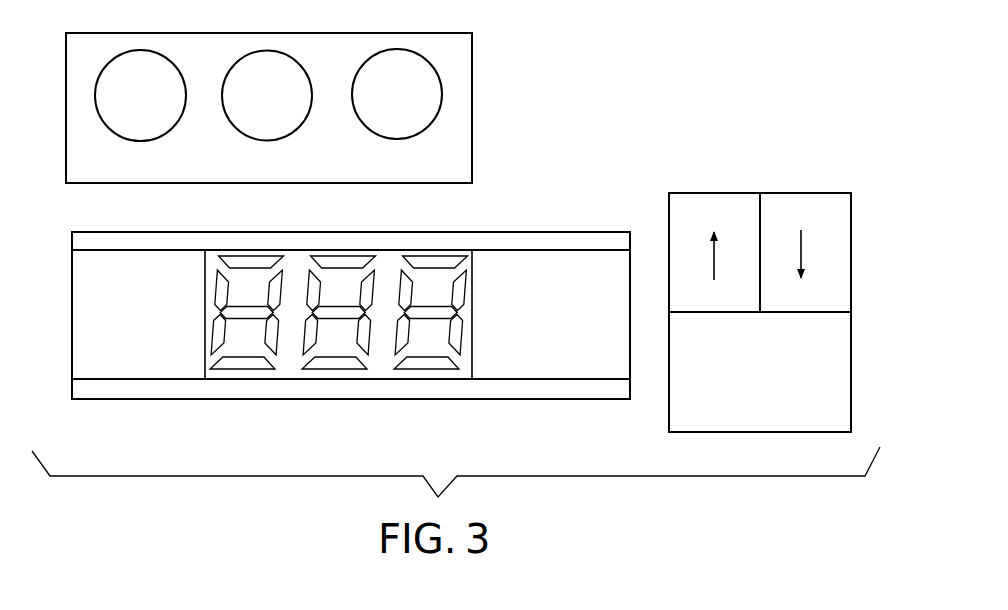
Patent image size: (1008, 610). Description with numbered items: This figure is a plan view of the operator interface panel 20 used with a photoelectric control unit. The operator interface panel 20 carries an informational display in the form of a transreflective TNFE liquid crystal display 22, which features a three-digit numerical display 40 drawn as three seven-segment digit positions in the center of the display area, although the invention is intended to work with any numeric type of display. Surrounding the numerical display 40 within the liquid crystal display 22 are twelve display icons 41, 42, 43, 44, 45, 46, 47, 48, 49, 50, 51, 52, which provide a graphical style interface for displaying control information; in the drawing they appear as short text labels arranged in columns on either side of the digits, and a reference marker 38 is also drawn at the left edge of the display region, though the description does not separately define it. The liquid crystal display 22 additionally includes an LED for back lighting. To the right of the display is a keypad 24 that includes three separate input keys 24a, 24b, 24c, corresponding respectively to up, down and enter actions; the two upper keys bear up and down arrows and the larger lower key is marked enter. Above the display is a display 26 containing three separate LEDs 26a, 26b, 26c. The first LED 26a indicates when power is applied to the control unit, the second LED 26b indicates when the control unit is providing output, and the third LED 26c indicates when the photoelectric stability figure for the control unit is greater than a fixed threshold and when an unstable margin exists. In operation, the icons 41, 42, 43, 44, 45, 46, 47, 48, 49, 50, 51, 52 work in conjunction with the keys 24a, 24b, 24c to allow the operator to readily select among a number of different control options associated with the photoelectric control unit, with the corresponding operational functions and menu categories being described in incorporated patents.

The operator interface panel 20 is at (152, 404).
The liquid crystal display 22 is at (516, 232).
The keypad 24 is at (852, 250).
The input key 24a is at (716, 193).
The input key 24b is at (806, 193).
The input key 24c is at (757, 432).
The display 26 is at (472, 67).
The LED 26a is at (160, 107).
The LED 26b is at (289, 107).
The LED 26c is at (416, 107).
The mode indicator column 38 is at (72, 325).
The three-digit numerical display 40 is at (335, 380).
The display icon 41 is at (80, 288).
The display icon 42 is at (80, 315).
The display icon 43 is at (165, 280).
The display icon 44 is at (178, 345).
The display icon 45 is at (156, 318).
The display icon 46 is at (503, 278).
The display icon 47 is at (528, 307).
The display icon 48 is at (512, 346).
The display icon 49 is at (588, 346).
The display icon 50 is at (570, 302).
The display icon 51 is at (88, 345).
The display icon 52 is at (588, 278).